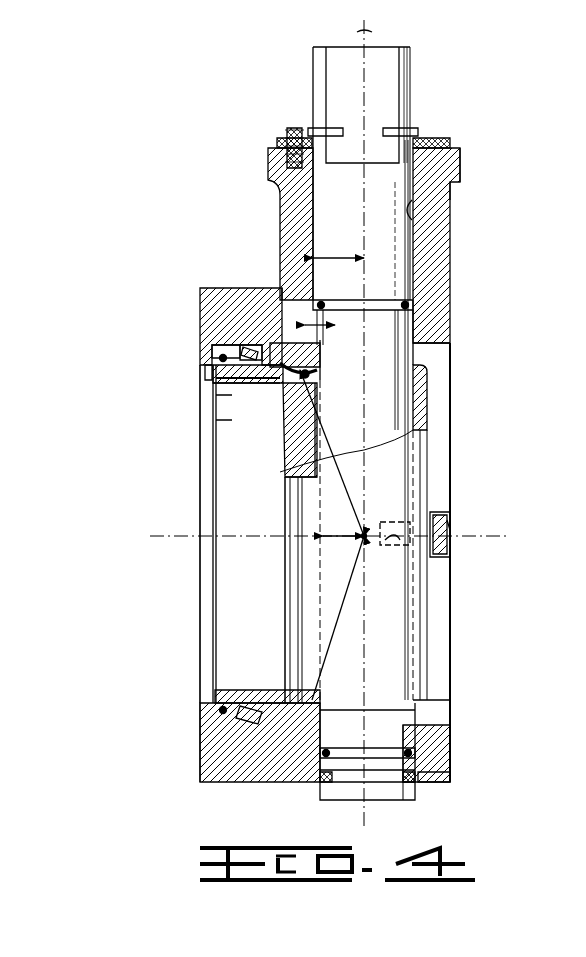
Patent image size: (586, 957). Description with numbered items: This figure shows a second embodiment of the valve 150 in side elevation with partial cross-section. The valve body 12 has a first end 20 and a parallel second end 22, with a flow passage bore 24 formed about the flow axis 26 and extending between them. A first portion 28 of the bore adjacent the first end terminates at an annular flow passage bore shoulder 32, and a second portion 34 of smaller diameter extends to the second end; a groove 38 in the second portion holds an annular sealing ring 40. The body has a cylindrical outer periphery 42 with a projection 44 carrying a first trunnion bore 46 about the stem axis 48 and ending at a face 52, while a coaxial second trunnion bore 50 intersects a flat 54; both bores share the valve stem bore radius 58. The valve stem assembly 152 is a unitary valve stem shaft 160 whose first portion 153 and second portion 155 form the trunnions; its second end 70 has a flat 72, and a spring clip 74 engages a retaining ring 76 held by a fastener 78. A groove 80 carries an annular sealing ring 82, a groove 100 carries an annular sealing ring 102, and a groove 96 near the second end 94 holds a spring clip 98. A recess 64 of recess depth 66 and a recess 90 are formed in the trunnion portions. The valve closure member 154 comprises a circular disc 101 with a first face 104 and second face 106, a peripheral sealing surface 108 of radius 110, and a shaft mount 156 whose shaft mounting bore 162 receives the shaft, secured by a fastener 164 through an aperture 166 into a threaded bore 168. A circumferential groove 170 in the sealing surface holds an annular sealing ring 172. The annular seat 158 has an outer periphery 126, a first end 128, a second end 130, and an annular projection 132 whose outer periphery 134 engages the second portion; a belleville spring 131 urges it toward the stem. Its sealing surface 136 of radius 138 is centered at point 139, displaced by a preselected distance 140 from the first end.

The second end 70 is at (345, 47).
The stem axis 48 is at (370, 32).
The valve stem assembly 152 is at (414, 62).
The flat 72 is at (385, 84).
The spring clip 74 is at (412, 128).
The valve 150 is at (468, 108).
The fastener 78 is at (293, 128).
The retaining ring 76 is at (445, 140).
The face 52 is at (455, 150).
The projection 44 is at (460, 170).
The first portion 153 is at (409, 190).
The first trunnion bore 46 is at (420, 215).
The valve stem bore radius 58 is at (338, 262).
The valve stem shaft 160 is at (408, 255).
The valve body 12 is at (455, 260).
The circumferential groove 80 is at (375, 310).
The annular sealing ring 82 is at (410, 305).
The outer periphery 42 is at (262, 343).
The belleville spring 131 is at (243, 350).
The second end 130 is at (250, 347).
The annular flow passage bore shoulder 32 is at (282, 340).
The second end 22 is at (200, 315).
The first end 20 is at (452, 328).
The recess depth 66 is at (335, 325).
The recess 64 is at (322, 352).
The annular sealing ring 40 is at (215, 352).
The first end 128 is at (318, 368).
The groove 38 is at (218, 358).
The first portion 28 is at (452, 350).
The outer periphery 126 is at (312, 372).
The outer periphery 134 is at (208, 368).
The sealing surface 108 is at (320, 376).
The shaft mounting bore 162 is at (425, 400).
The second portion 34 is at (215, 385).
The annular sealing ring 172 is at (322, 385).
The annular projection 132 is at (222, 382).
The annular seat 158 is at (250, 405).
The sealing surface 136 is at (295, 395).
The circumferential groove 170 is at (285, 440).
The shaft mount 156 is at (420, 440).
The valve closure member 154 is at (290, 478).
The radius 110 is at (345, 475).
The center point 139 is at (366, 534).
The preselected distance 140 is at (344, 536).
The fastener 164 is at (440, 516).
The flow axis 26 is at (462, 532).
The circular disc 101 is at (296, 558).
The aperture 166 is at (450, 548).
The threaded bore 168 is at (395, 545).
The radius 138 is at (340, 608).
The second face 106 is at (283, 625).
The first face 104 is at (318, 672).
The flow passage bore 24 is at (430, 690).
The groove 100 is at (350, 750).
The recess 90 is at (340, 712).
The annular sealing ring 102 is at (406, 750).
The second trunnion bore 50 is at (452, 745).
The second portion 155 is at (450, 778).
The spring clip 98 is at (318, 782).
The groove 96 is at (355, 782).
The second end 94 is at (395, 800).
The flat 54 is at (430, 782).